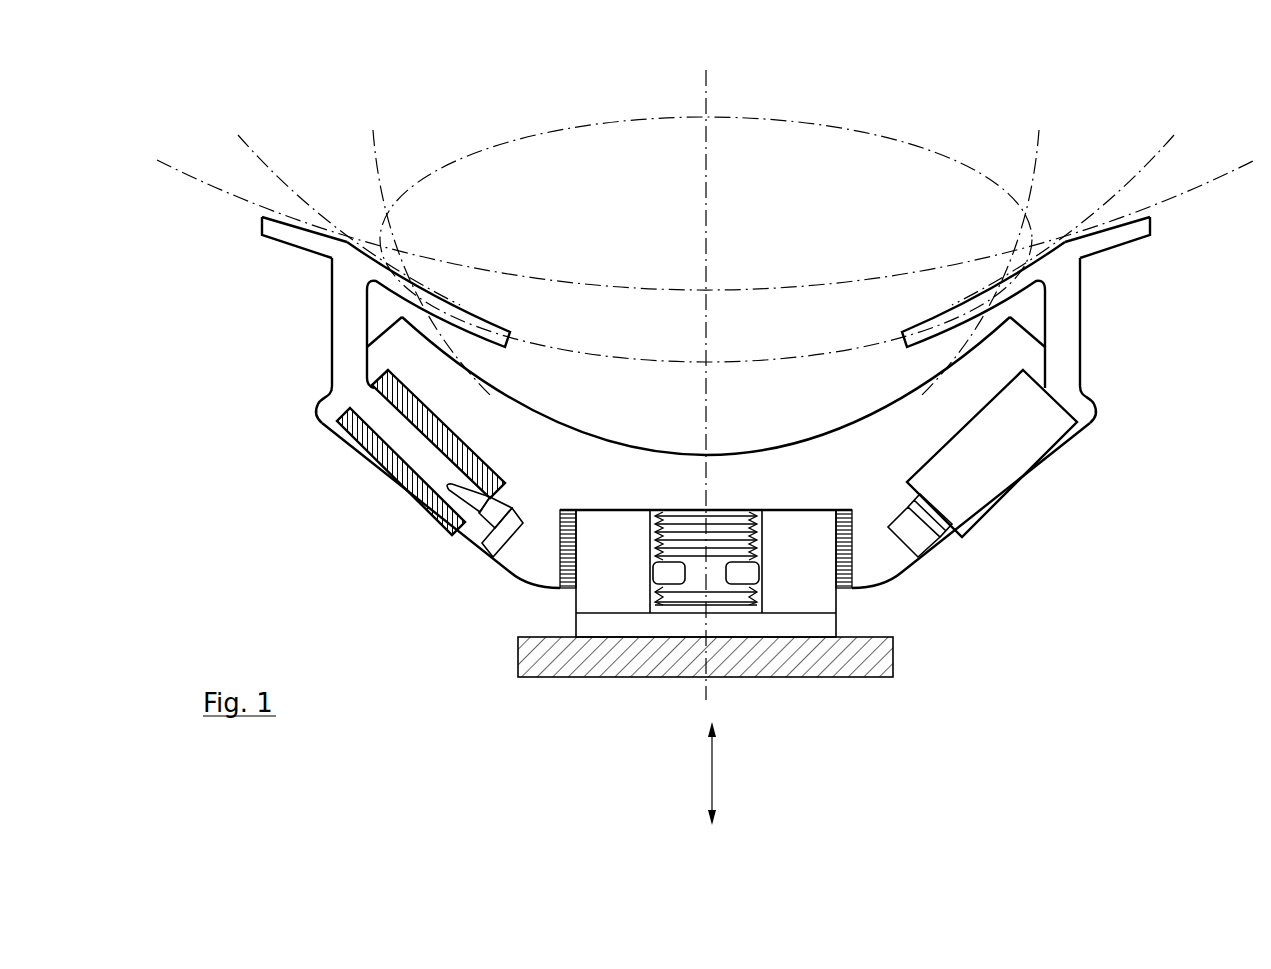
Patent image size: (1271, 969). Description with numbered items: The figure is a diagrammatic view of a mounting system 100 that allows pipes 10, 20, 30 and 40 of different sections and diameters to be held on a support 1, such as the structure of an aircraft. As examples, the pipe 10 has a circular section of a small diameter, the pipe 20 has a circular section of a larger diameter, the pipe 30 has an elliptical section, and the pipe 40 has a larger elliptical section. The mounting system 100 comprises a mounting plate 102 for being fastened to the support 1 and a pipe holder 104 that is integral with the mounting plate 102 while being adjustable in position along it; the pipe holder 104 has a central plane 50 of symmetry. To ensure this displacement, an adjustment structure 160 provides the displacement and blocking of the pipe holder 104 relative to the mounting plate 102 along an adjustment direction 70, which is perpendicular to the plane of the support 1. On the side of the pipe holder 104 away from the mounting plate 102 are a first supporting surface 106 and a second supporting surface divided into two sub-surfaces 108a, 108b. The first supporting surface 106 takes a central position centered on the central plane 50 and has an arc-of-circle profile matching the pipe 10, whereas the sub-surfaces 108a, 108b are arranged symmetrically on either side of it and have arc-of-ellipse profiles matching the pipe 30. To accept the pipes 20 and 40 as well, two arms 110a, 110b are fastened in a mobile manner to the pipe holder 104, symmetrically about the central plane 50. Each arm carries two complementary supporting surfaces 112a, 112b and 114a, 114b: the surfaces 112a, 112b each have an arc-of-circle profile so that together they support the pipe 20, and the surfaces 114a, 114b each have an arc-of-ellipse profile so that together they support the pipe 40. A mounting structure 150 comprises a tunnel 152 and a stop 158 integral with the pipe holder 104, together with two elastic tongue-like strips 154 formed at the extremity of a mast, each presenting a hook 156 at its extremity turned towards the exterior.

The support 1 is at (583, 657).
The pipe 10 is at (373, 160).
The pipe 20 is at (264, 162).
The pipe 30 is at (458, 160).
The pipe 40 is at (153, 143).
The central plane of symmetry 50 is at (707, 103).
The adjustment direction 70 is at (730, 773).
The mounting system 100 is at (707, 457).
The mounting plate 102 is at (813, 622).
The pipe holder 104 is at (695, 356).
The first supporting surface 106 is at (733, 457).
The sub-surface of second supporting surface 108a is at (400, 347).
The sub-surface of second supporting surface 108b is at (987, 342).
The arm 110a is at (342, 372).
The arm 110b is at (1070, 373).
The complementary supporting surface 112a is at (470, 308).
The complementary supporting surface 112b is at (958, 302).
The complementary supporting surface 114a is at (287, 213).
The complementary supporting surface 114b is at (1107, 222).
The mounting structure 150 is at (389, 569).
The tunnel 152 is at (363, 440).
The elastic tongue-like strip 154 is at (455, 502).
The hook 156 is at (458, 530).
The stop 158 is at (505, 543).
The adjustment structure 160 is at (804, 650).